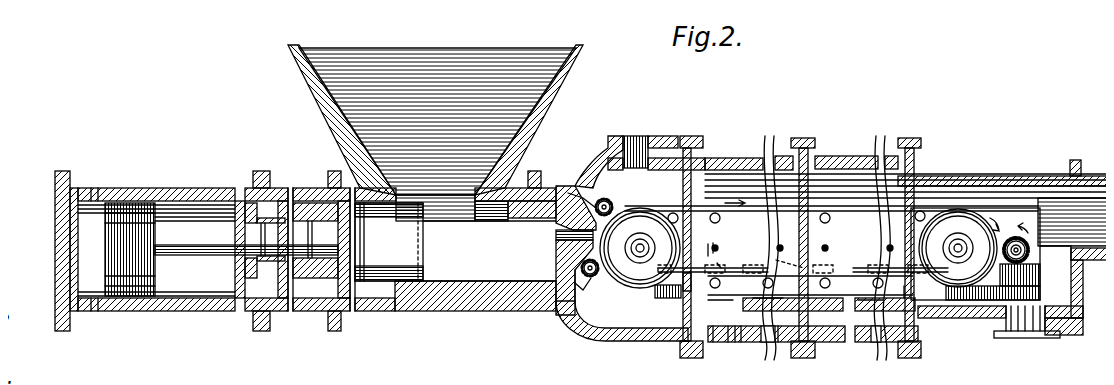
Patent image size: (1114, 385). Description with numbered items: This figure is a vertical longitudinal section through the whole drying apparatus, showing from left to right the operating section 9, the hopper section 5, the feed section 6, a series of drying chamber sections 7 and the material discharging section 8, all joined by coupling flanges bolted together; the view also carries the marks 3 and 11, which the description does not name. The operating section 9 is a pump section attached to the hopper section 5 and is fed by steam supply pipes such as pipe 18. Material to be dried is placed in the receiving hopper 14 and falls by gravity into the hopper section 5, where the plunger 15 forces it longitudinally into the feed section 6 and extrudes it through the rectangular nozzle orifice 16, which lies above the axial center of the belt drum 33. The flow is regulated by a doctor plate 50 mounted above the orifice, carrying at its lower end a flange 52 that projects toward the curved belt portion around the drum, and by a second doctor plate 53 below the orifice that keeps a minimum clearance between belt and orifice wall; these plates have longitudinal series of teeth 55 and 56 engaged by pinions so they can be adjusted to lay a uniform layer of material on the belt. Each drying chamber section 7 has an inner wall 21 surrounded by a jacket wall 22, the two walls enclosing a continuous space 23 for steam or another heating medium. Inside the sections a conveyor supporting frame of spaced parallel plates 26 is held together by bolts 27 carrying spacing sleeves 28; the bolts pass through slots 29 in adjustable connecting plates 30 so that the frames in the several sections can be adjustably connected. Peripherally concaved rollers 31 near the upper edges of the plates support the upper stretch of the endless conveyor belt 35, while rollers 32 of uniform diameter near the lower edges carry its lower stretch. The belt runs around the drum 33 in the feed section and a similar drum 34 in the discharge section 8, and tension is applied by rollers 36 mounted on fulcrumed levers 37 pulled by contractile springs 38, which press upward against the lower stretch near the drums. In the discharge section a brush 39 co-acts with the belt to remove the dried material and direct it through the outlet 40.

The conveying section 3 is at (743, 148).
The hopper section 5 is at (455, 252).
The feed section 6 is at (627, 333).
The drying chamber section 7 is at (760, 139).
The material discharging section 8 is at (981, 168).
The operating section 9 is at (196, 254).
The discharge pipe 11 is at (1079, 167).
The receiving hopper 14 is at (553, 73).
The plunger 15 is at (408, 268).
The nozzle orifice 16 is at (580, 233).
The steam supply pipe 18 is at (707, 236).
The inner wall 21 is at (710, 332).
The jacket wall 22 is at (720, 334).
The continuous space 23 is at (772, 335).
The frame plates 26 is at (945, 157).
The bolts 27 is at (716, 236).
The spacing sleeves 28 is at (821, 238).
The slots 29 is at (709, 258).
The adjustable connecting plates 30 is at (768, 304).
The peripherally concaved rollers 31 is at (816, 215).
The rollers 32 is at (756, 277).
The belt drum 33 is at (616, 262).
The belt drum 34 is at (958, 217).
The endless conveyor belt 35 is at (962, 280).
The tension rollers 36 is at (672, 282).
The levers 37 is at (708, 217).
The contractile springs 38 is at (795, 306).
The brush 39 is at (1021, 222).
The outlet 40 is at (1025, 318).
The doctor plate 50 is at (560, 183).
The flange 52 is at (578, 226).
The second doctor plate 53 is at (566, 278).
The teeth 55 is at (604, 193).
The teeth 56 is at (580, 270).